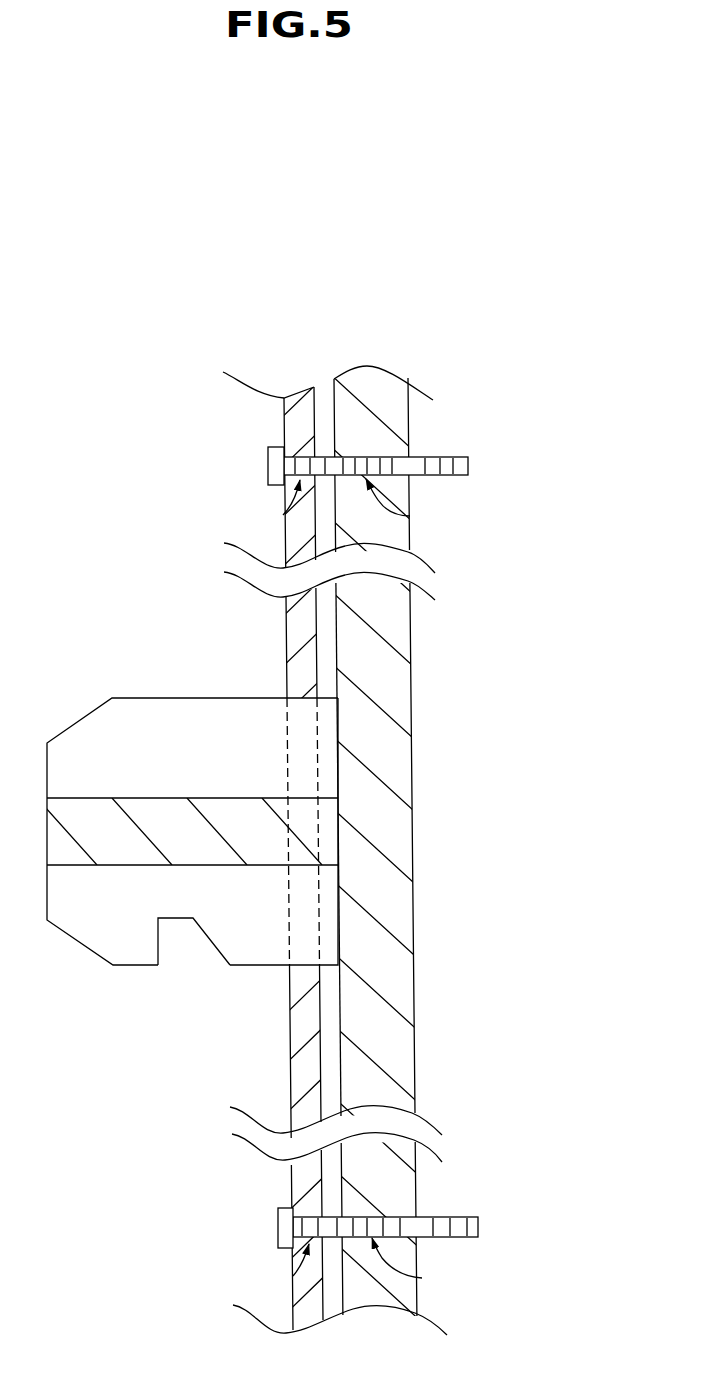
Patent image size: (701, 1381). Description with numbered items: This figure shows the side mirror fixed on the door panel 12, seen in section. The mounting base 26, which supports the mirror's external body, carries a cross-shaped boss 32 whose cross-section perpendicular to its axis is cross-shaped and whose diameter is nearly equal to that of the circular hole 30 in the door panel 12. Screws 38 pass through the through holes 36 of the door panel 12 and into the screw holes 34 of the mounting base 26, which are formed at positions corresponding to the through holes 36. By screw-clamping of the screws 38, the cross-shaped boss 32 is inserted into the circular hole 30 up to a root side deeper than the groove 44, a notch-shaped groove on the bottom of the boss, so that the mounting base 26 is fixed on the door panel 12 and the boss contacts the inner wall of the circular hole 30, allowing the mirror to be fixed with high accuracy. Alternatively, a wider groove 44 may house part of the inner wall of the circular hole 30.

The door panel 12 is at (284, 425).
The mounting base 26 is at (392, 617).
The circular hole 30 is at (308, 750).
The cross-shaped boss 32 is at (160, 697).
The screw hole 34 is at (410, 516).
The through hole 36 is at (283, 515).
The screw 38 is at (450, 457).
The groove 44 is at (187, 968).